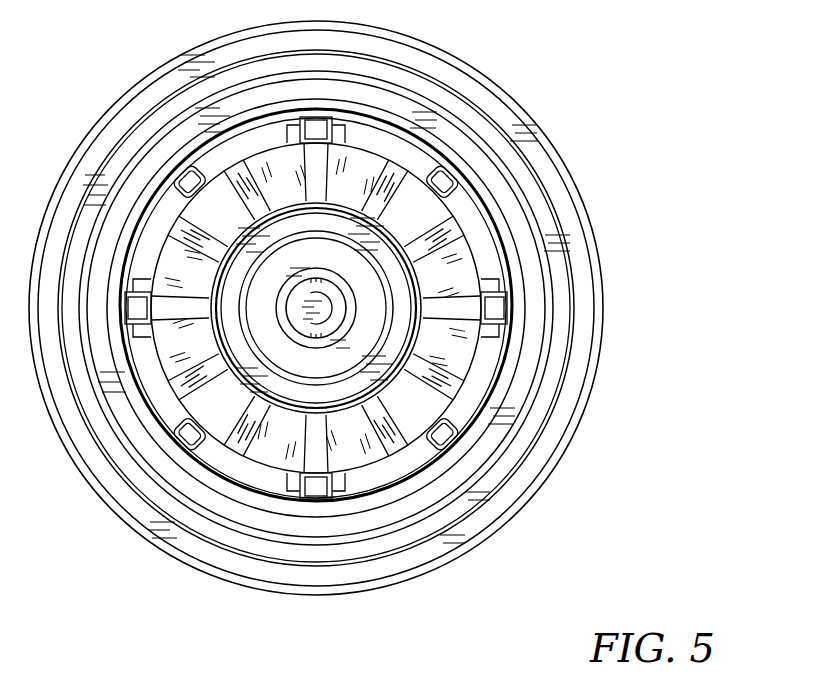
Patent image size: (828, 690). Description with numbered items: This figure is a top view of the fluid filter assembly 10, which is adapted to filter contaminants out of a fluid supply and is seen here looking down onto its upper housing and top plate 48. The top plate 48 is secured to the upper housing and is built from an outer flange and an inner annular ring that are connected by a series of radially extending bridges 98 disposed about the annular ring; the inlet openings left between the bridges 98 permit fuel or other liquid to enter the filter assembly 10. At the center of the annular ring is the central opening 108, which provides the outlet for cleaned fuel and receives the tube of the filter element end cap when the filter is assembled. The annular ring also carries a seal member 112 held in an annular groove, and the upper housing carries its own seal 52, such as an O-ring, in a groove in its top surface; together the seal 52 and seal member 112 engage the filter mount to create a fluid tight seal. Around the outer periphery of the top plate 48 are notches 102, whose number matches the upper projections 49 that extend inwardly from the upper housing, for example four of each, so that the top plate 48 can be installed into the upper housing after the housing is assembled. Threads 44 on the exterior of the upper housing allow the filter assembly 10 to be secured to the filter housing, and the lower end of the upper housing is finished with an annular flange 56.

The fluid filter assembly 10 is at (608, 448).
The threads 44 is at (500, 456).
The top plate 48 is at (378, 133).
The upper projections 49 is at (299, 493).
The seal 52 is at (541, 331).
The annular flange 56 is at (585, 357).
The radially extending bridges 98 is at (352, 432).
The notches 102 is at (442, 193).
The central opening 108 is at (270, 303).
The seal member 112 is at (400, 297).